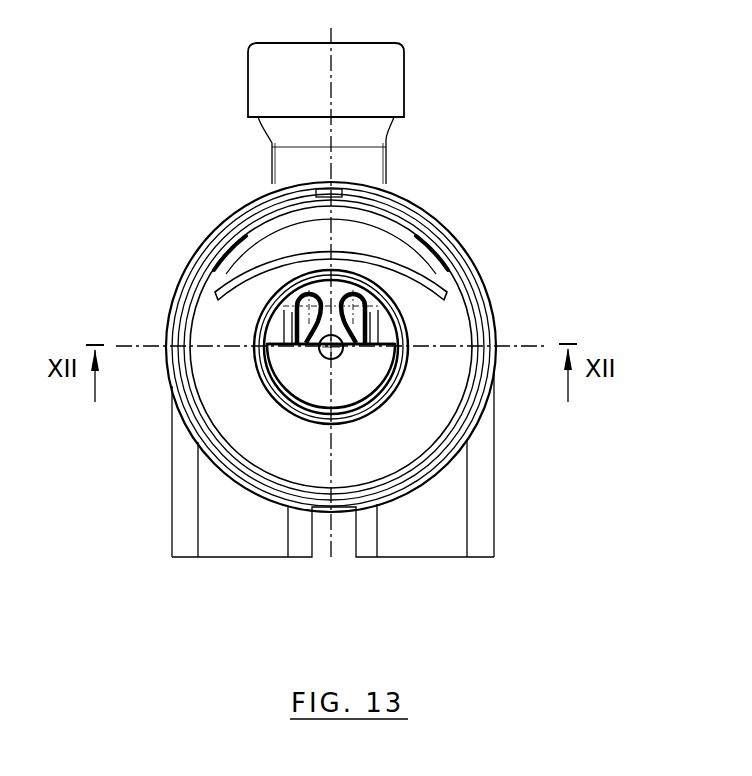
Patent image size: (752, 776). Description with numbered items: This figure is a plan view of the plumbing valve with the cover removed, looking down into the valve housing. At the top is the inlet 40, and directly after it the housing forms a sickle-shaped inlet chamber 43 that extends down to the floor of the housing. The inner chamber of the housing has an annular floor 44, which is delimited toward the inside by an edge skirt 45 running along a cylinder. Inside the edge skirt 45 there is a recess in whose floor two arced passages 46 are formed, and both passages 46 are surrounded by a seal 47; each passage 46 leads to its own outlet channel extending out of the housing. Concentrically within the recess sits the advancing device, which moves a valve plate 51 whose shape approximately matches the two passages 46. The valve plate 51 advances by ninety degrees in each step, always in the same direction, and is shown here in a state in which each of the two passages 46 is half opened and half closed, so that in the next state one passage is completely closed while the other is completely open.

The inlet 40 is at (392, 80).
The sickle-shaped inlet chamber 43 is at (387, 254).
The annular floor 44 is at (240, 416).
The edge skirt 45 is at (405, 371).
The arced passages 46 is at (295, 308).
The seal 47 is at (264, 347).
The valve plate 51 is at (317, 395).